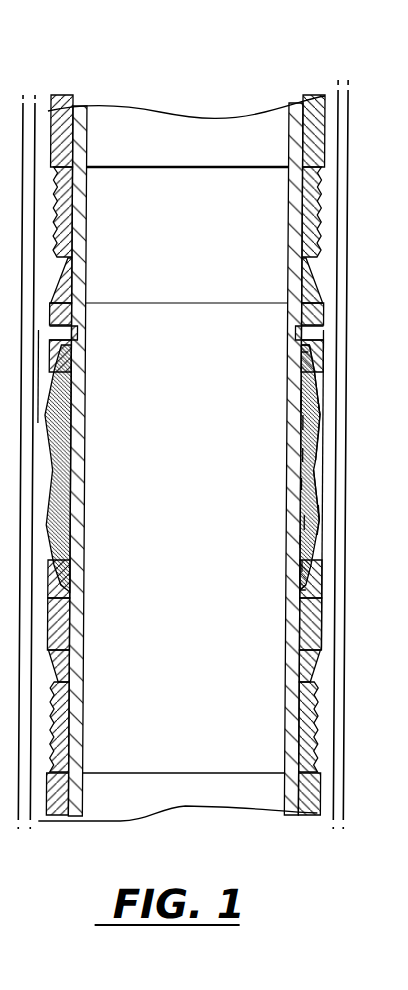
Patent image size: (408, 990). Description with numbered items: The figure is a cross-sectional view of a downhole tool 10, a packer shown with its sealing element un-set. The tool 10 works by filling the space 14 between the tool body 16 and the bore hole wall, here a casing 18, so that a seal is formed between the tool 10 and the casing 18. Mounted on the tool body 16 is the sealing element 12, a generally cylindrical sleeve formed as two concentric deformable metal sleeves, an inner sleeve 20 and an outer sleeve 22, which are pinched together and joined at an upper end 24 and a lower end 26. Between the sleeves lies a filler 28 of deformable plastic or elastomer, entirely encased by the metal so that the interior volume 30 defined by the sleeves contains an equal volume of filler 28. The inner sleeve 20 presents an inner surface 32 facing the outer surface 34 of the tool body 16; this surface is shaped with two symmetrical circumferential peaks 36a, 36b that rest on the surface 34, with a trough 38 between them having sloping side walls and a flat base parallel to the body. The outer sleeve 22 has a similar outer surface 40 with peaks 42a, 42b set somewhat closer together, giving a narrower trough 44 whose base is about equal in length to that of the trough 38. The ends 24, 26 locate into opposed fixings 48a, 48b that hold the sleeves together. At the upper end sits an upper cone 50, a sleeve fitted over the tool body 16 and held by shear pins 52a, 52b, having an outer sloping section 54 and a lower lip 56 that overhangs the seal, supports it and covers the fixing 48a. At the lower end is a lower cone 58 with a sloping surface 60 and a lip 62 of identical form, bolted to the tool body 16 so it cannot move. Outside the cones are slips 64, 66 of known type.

The downhole tool 10 is at (314, 76).
The sealing element 12 is at (323, 540).
The space 14 is at (328, 480).
The tool body 16 is at (288, 788).
The casing 18 is at (327, 812).
The inner sleeve 20 is at (303, 406).
The outer sleeve 22 is at (312, 402).
The upper end 24 is at (309, 352).
The lower end 26 is at (310, 588).
The filler 28 is at (307, 523).
The interior volume 30 is at (305, 422).
The inner surface 32 is at (305, 566).
The outer surface of tool body 34 is at (304, 484).
The first peak 36a is at (302, 398).
The second peak 36b is at (303, 541).
The trough 38 is at (305, 456).
The outer surface 40 is at (318, 455).
The first outer peak 42a is at (321, 412).
The second outer peak 42b is at (321, 520).
The narrower trough 44 is at (318, 505).
The upper fixing 48a is at (303, 354).
The lower fixing 48b is at (307, 592).
The upper cone 50 is at (314, 312).
The first shear pin 52a is at (80, 332).
The second shear pin 52b is at (296, 331).
The outer sloping section 54 is at (312, 282).
The lower lip 56 is at (323, 370).
The lower cone 58 is at (318, 632).
The sloping surface 60 is at (314, 652).
The lip 62 is at (312, 577).
The upper slip 64 is at (320, 211).
The lower slip 66 is at (318, 736).